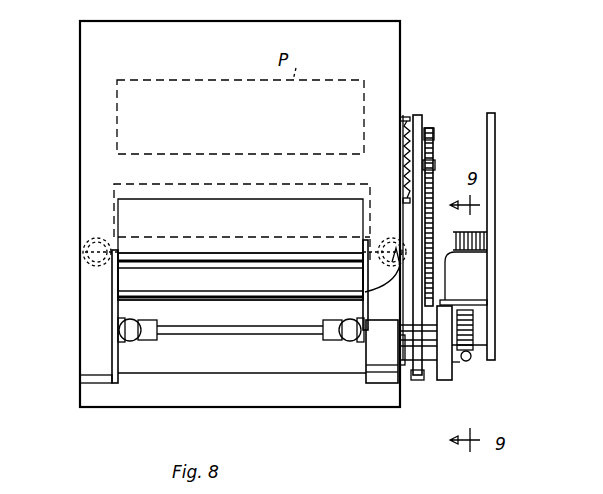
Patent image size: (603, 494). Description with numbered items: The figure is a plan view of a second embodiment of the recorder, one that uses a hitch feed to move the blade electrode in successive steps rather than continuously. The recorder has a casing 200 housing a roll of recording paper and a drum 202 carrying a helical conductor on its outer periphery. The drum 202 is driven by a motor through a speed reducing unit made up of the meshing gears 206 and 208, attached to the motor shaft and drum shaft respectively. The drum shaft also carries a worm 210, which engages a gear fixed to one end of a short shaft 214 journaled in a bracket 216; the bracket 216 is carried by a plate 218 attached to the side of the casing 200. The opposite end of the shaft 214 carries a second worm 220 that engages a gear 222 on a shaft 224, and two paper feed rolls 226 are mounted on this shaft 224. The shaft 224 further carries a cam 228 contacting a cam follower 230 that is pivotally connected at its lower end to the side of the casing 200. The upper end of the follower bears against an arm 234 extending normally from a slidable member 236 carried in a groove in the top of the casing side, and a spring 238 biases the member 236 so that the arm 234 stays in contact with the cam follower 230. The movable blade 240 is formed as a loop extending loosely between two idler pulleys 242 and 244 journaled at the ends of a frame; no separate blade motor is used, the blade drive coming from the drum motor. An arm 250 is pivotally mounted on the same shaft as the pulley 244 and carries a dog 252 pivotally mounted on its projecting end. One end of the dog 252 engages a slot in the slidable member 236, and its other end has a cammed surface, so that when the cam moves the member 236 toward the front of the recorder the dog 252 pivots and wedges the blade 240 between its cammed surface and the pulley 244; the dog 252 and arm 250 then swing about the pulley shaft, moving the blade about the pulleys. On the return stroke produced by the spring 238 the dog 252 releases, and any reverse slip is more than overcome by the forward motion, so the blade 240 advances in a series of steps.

The casing 200 is at (401, 63).
The drum 202 is at (122, 278).
The gear 206 is at (430, 130).
The gear 208 is at (433, 168).
The worm 210 is at (472, 234).
The short shaft 214 is at (462, 347).
The bracket 216 is at (473, 270).
The plate 218 is at (496, 175).
The second worm 220 is at (470, 356).
The gear 222 is at (468, 325).
The shaft 224 is at (401, 340).
The paper feed rolls 226 is at (132, 345).
The cam 228 is at (455, 302).
The cam follower 230 is at (455, 365).
The arm 234 is at (445, 380).
The slidable member 236 is at (418, 115).
The spring 238 is at (432, 150).
The movable blade 240 is at (95, 238).
The pulley 242 is at (85, 252).
The pulley 244 is at (395, 240).
The arm 250 is at (392, 243).
The dog 252 is at (365, 292).